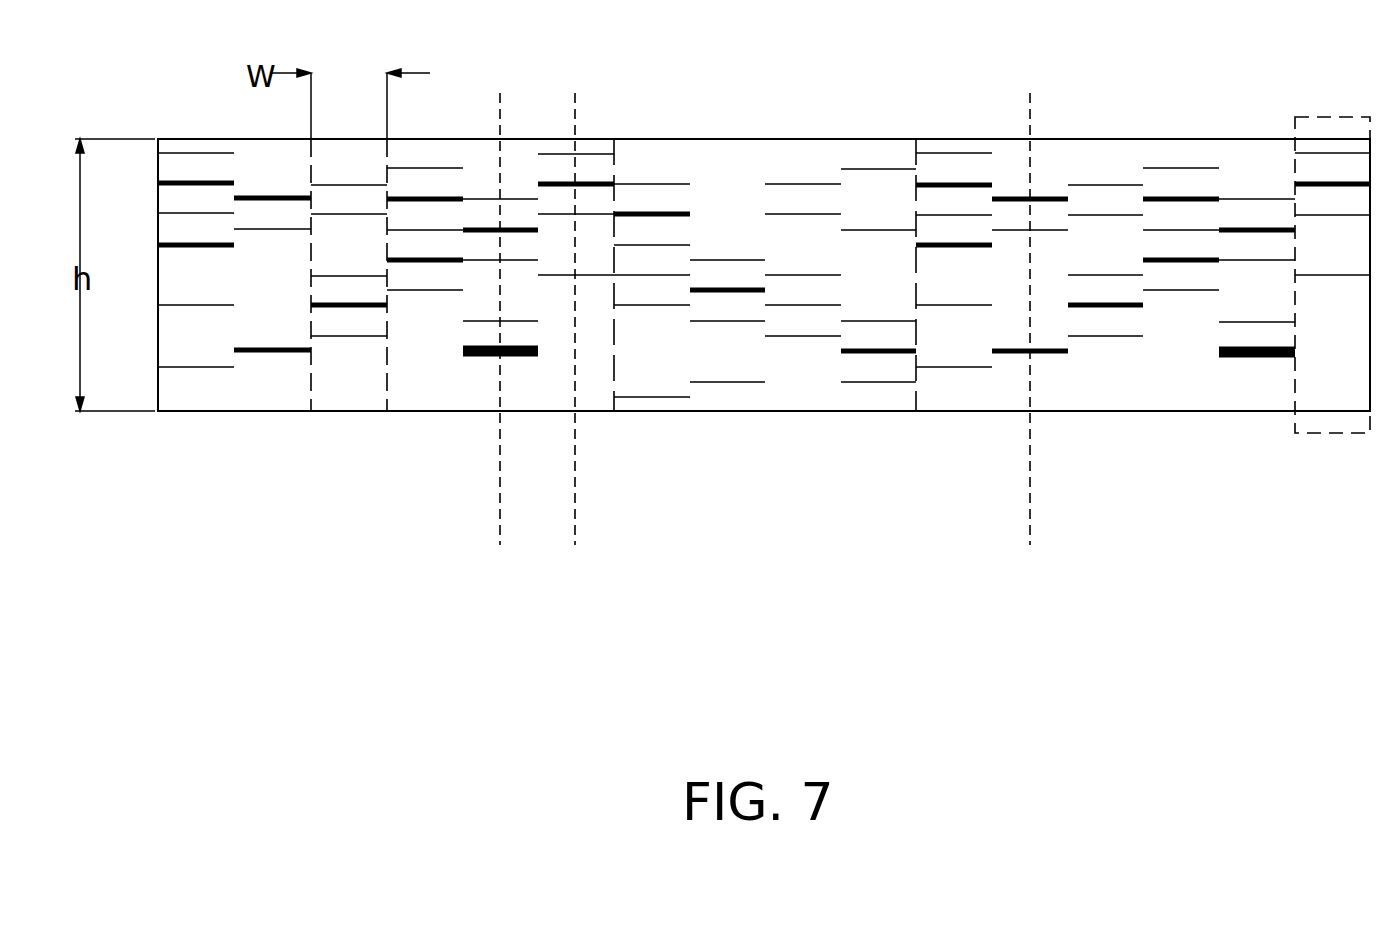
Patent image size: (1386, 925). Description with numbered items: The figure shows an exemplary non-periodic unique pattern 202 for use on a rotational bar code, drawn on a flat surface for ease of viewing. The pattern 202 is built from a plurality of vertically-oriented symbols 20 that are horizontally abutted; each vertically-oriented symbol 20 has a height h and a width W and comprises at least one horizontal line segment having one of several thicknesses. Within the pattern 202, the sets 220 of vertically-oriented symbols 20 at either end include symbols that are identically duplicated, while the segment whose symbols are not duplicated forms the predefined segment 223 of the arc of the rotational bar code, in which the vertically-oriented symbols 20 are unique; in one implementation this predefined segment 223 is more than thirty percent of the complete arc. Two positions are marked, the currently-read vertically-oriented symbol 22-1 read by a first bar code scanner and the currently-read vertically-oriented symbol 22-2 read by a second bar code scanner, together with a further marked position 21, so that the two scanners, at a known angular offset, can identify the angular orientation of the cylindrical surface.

The non-periodic unique pattern 202 is at (818, 568).
The sets of vertically-oriented symbols 220 is at (614, 438).
The predefined segment of the arc 223 is at (916, 438).
The first boundary line 21 is at (500, 514).
The currently-read vertically-oriented symbol 22-2 is at (575, 514).
The currently-read vertically-oriented symbol 22-1 is at (1030, 514).
The vertically-oriented symbol 20 is at (1340, 433).